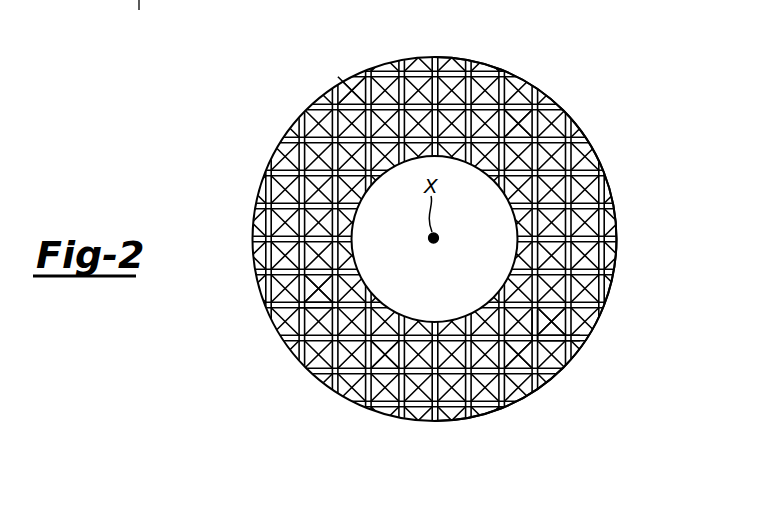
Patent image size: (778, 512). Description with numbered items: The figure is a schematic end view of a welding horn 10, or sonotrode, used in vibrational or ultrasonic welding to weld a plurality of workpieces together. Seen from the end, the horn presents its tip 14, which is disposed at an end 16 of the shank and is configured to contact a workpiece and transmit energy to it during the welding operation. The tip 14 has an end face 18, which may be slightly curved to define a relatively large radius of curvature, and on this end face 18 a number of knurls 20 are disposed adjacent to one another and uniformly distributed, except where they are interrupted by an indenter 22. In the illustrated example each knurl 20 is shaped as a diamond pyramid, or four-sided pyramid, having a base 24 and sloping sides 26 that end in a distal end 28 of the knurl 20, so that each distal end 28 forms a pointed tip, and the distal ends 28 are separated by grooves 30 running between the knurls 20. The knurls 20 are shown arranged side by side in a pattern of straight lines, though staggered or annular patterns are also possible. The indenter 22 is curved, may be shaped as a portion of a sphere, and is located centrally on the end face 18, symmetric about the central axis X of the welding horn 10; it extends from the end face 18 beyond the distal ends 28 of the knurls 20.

The welding horn 10 is at (527, 41).
The tip 14 is at (528, 81).
The end of the shank 16 is at (617, 183).
The end face 18 is at (308, 325).
The knurls 20 is at (360, 115).
The indenter 22 is at (392, 220).
The base 24 is at (562, 342).
The sloping sides 26 is at (510, 353).
The distal end 28 is at (530, 328).
The grooves 30 is at (378, 356).